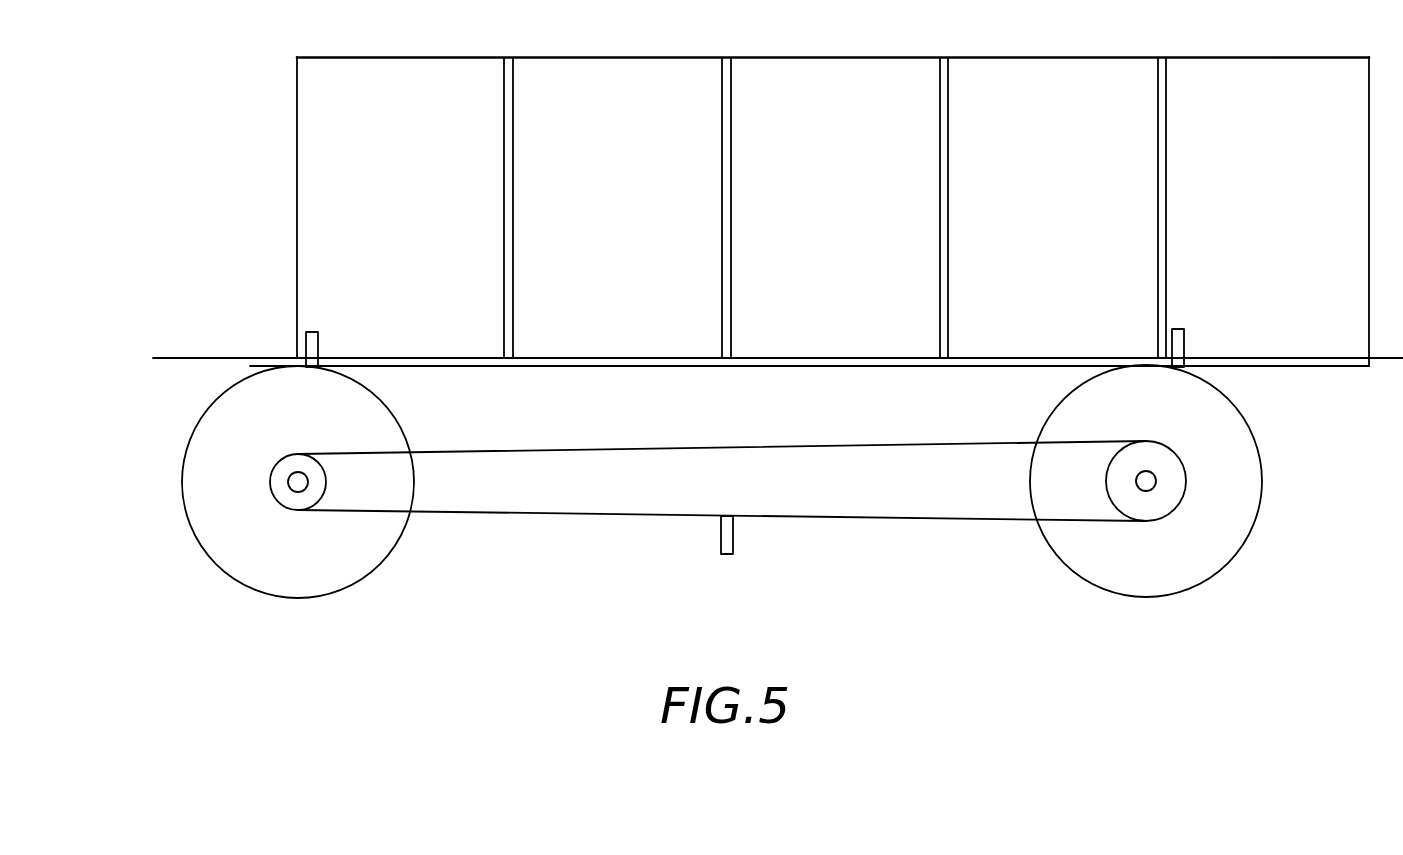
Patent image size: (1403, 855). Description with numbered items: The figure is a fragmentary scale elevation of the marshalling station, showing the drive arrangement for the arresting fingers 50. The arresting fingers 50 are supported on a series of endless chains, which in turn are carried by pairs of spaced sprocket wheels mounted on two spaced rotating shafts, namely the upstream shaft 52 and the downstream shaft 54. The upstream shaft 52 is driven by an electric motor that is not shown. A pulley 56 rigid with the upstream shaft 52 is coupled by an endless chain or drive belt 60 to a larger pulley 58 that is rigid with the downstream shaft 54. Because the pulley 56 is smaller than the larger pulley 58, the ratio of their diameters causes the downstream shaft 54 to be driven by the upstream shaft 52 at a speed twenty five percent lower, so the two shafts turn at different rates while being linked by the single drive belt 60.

The arresting fingers 50 is at (320, 340).
The upstream shaft 52 is at (288, 486).
The downstream shaft 54 is at (1156, 481).
The pulley 56 is at (280, 472).
The larger pulley 58 is at (1172, 467).
The drive belt 60 is at (718, 447).